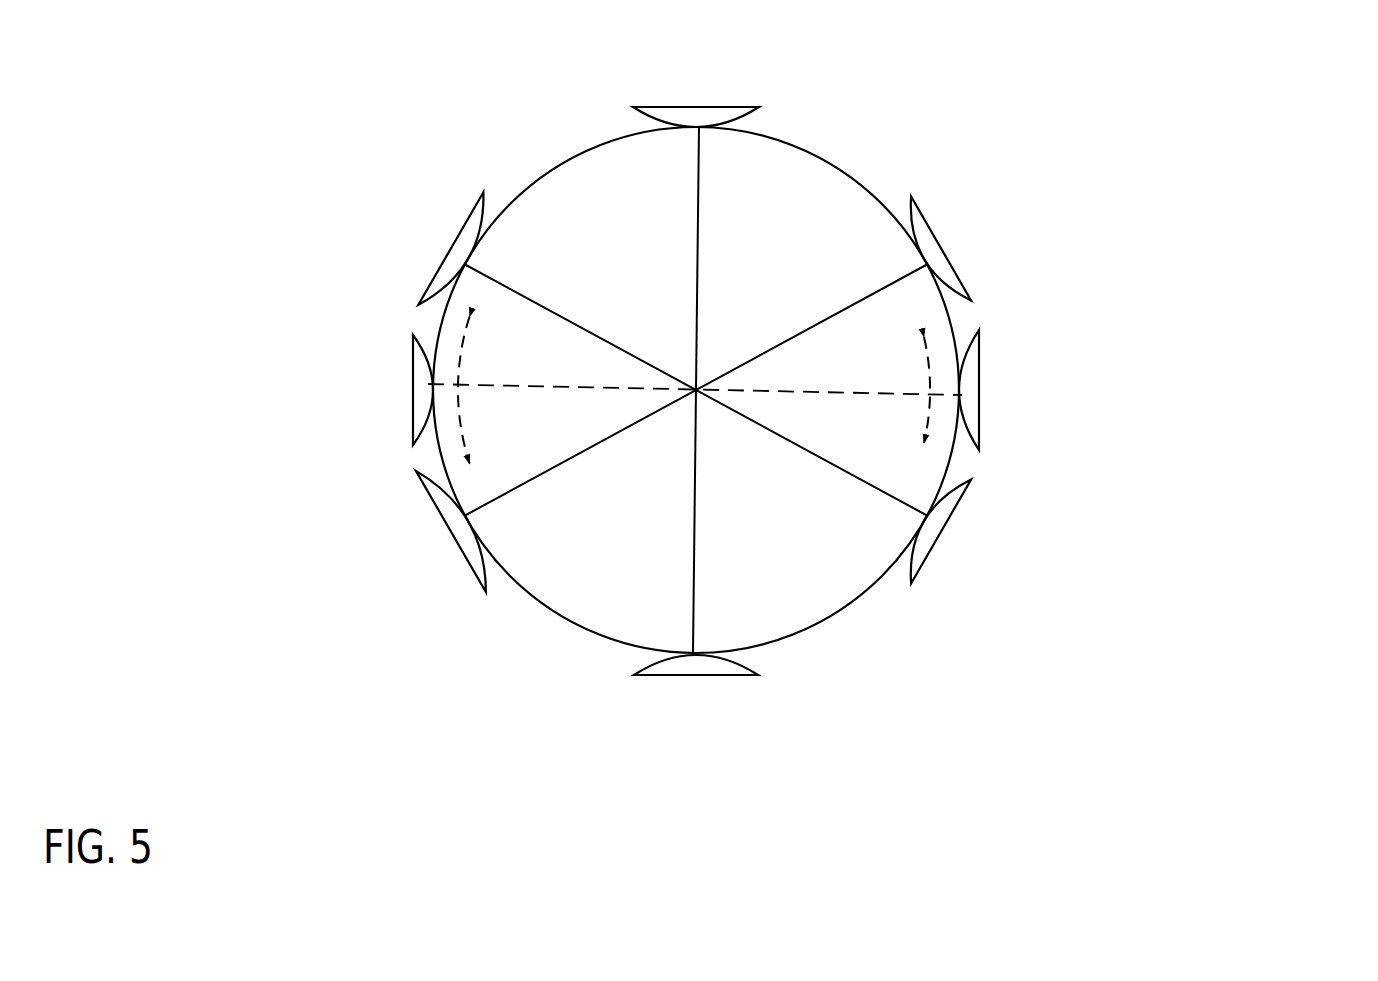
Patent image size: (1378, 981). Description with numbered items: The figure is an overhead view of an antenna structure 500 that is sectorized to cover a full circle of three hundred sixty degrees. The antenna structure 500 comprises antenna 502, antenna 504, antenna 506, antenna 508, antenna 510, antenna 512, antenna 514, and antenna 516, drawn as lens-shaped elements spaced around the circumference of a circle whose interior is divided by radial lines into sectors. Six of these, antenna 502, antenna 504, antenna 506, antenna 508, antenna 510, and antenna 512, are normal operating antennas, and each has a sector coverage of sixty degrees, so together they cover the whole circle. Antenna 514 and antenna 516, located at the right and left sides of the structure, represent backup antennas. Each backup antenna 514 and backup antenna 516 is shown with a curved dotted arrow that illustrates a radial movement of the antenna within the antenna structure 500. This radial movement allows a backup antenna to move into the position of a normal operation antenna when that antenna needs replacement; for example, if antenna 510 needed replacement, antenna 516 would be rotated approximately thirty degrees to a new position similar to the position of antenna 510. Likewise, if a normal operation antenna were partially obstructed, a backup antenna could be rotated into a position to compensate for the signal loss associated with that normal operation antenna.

The antenna structure 500 is at (1118, 111).
The antenna 502 is at (720, 98).
The antenna 504 is at (958, 280).
The antenna 506 is at (943, 535).
The antenna 508 is at (688, 695).
The antenna 510 is at (454, 546).
The antenna 512 is at (444, 247).
The backup antenna 514 is at (983, 393).
The backup antenna 516 is at (409, 382).